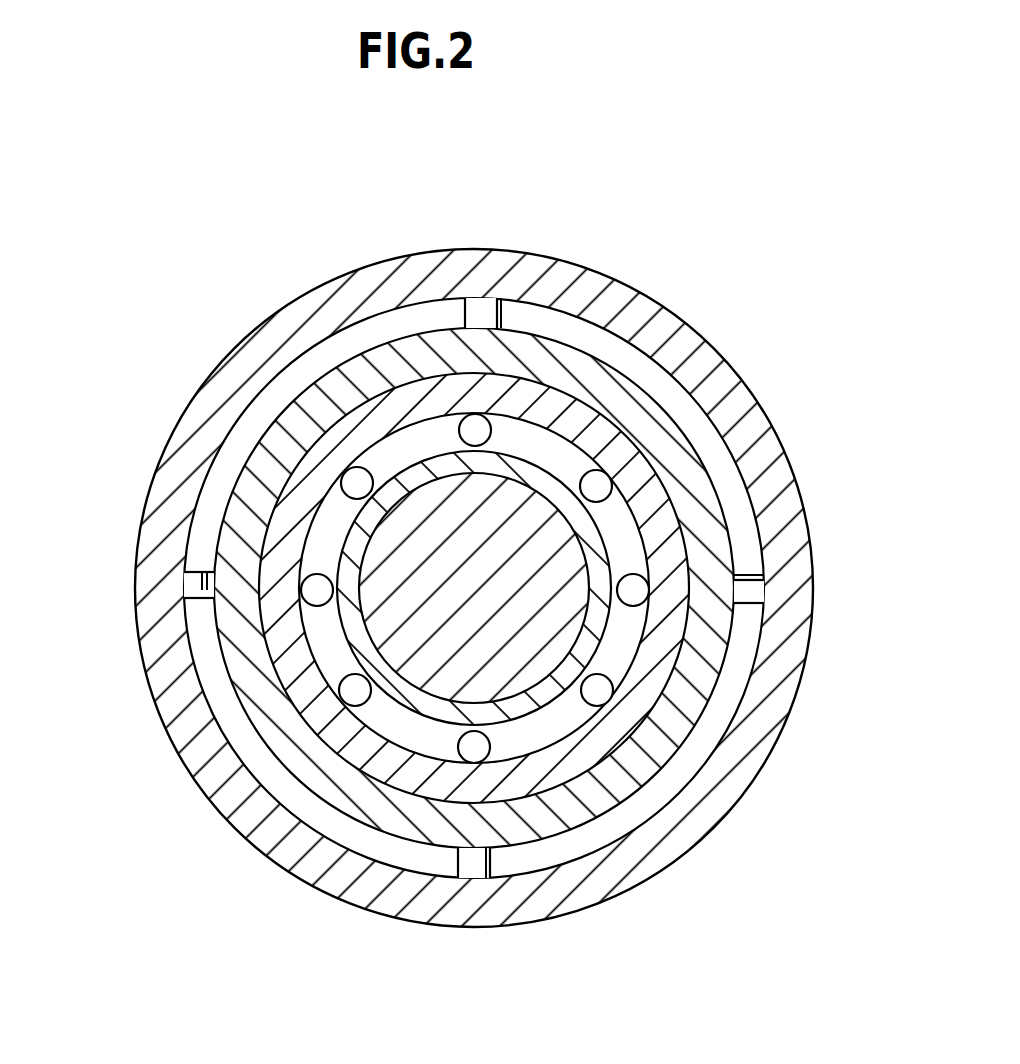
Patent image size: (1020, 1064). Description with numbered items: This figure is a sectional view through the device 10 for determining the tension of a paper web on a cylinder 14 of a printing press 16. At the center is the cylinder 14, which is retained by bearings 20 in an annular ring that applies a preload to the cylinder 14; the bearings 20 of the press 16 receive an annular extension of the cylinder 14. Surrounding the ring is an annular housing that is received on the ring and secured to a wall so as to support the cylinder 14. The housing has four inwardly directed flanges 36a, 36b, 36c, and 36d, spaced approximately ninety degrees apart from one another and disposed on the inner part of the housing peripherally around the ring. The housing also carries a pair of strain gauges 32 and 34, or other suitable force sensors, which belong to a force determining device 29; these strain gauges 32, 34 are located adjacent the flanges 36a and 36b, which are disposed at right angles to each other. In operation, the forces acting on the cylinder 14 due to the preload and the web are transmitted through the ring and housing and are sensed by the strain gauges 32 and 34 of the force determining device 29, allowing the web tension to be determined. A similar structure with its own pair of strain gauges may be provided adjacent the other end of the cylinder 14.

The device 10 is at (385, 252).
The cylinder 14 is at (491, 604).
The printing press 16 is at (300, 298).
The bearings 20 is at (342, 482).
The force determining device 29 is at (208, 364).
The strain gauge 32 is at (760, 572).
The strain gauge 34 is at (507, 302).
The flange 36a is at (753, 597).
The flange 36b is at (482, 310).
The flange 36c is at (203, 592).
The flange 36d is at (478, 868).